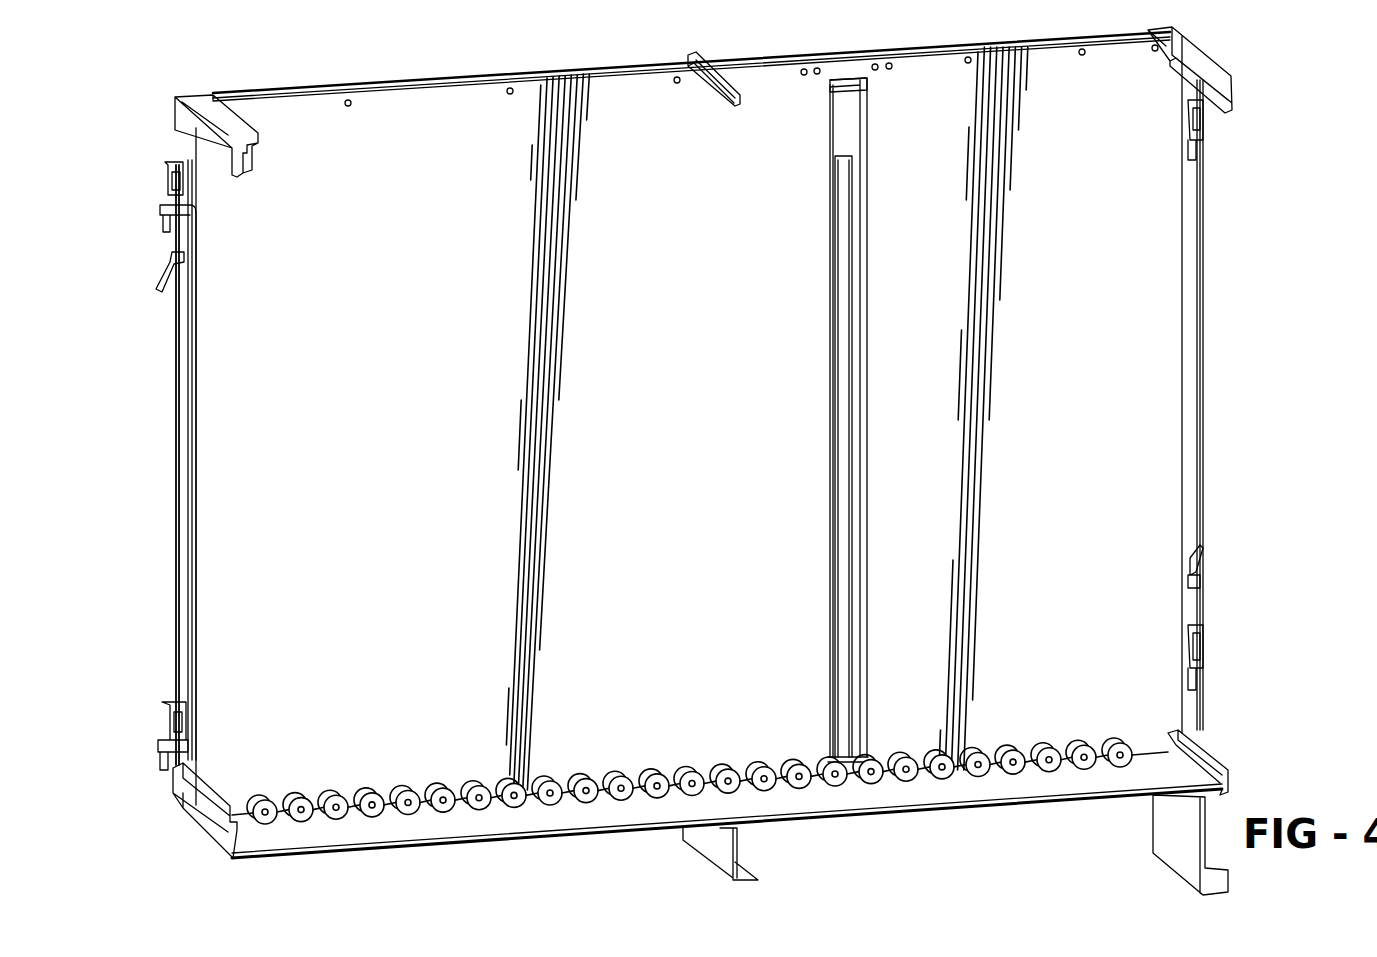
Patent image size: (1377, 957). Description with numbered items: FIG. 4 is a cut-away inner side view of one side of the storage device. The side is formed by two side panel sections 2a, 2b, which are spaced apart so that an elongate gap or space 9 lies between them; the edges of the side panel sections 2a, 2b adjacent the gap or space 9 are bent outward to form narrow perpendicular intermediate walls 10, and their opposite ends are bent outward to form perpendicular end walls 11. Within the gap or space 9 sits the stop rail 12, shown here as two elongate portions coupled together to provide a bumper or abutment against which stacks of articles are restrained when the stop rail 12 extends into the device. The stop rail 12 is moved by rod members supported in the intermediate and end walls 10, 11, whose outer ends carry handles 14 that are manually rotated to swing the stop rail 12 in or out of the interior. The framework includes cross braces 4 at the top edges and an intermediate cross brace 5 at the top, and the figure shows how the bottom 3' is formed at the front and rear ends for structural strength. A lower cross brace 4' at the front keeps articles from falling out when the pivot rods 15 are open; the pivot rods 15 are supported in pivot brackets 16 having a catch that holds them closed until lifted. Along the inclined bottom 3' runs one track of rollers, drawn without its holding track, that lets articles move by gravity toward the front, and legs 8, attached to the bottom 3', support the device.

The side panel section 2a is at (683, 418).
The side panel section 2b is at (1027, 403).
The bottom 3' is at (730, 810).
The cross brace 4 is at (724, 118).
The lower cross brace 4' is at (207, 796).
The intermediate cross brace 5 is at (713, 96).
The leg 8 is at (705, 848).
The gap or space 9 is at (850, 140).
The perpendicular intermediate wall 10 is at (867, 95).
The perpendicular end wall 11 is at (178, 505).
The stop rail 12 is at (862, 357).
The handle 14 is at (158, 280).
The pivot rod 15 is at (196, 300).
The pivot bracket 16 is at (160, 168).